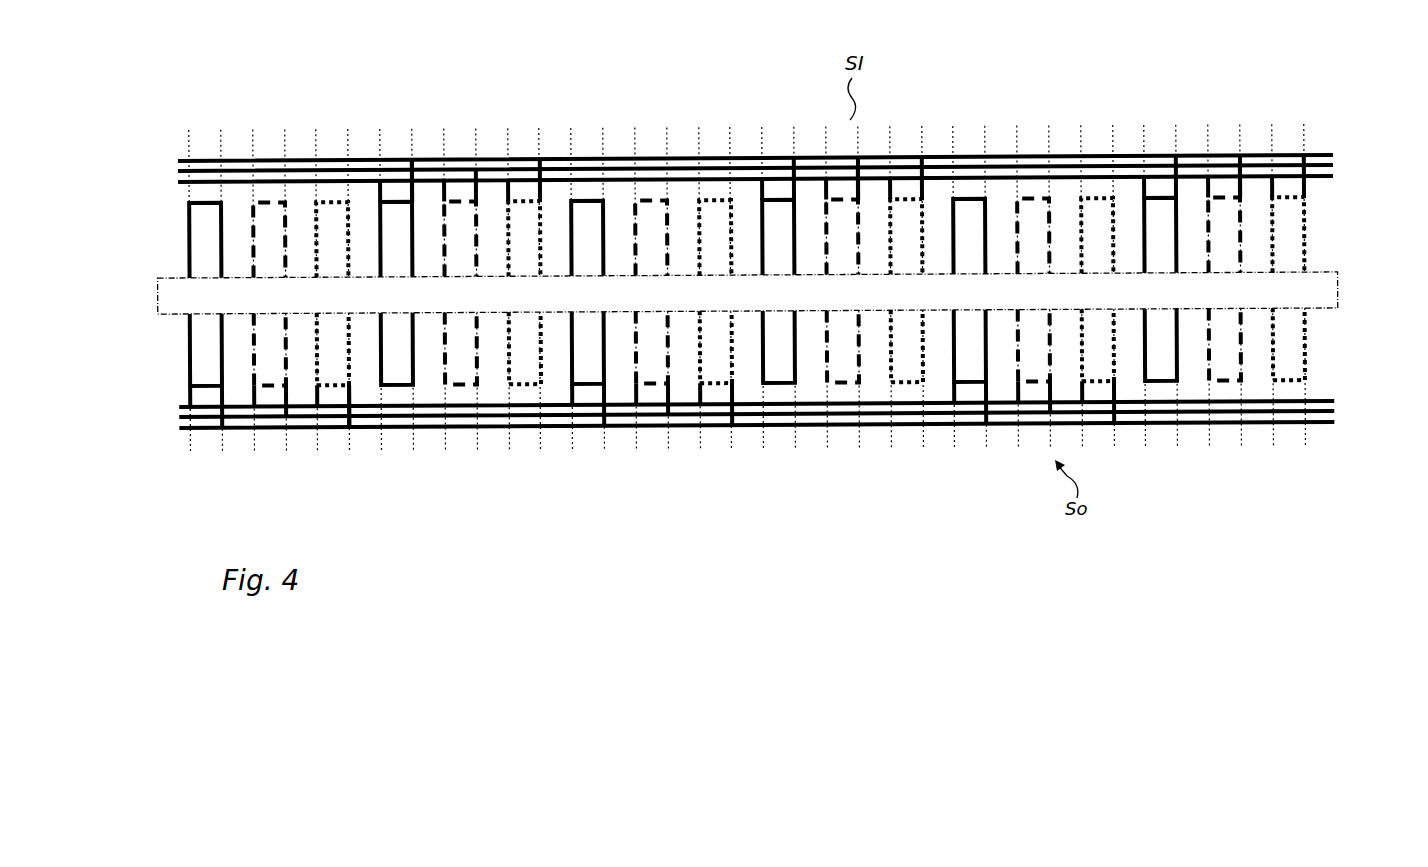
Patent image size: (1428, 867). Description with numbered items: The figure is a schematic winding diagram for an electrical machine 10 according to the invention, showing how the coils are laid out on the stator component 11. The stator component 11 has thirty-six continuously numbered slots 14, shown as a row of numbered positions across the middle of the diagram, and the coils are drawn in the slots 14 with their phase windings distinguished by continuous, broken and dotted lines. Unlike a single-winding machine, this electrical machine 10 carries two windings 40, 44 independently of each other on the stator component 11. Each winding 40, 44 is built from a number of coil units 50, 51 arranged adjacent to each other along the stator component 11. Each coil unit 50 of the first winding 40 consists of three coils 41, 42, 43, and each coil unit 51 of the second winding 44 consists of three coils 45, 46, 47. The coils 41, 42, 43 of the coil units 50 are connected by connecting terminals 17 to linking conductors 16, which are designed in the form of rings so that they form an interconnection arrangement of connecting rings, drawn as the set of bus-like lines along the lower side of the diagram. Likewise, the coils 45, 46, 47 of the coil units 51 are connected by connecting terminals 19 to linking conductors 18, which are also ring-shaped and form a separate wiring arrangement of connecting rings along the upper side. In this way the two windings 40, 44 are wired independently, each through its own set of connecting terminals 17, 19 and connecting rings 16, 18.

The electrical machine 10 is at (232, 122).
The stator component 11 is at (163, 231).
The slots 14 is at (412, 148).
The linking conductors 16 is at (1333, 422).
The connecting terminals 17 is at (984, 402).
The linking conductors 18 is at (1333, 176).
The connecting terminals 19 is at (790, 162).
The winding 40 is at (770, 464).
The coil 41 is at (715, 386).
The coil 42 is at (650, 386).
The coil 43 is at (588, 386).
The winding 44 is at (768, 123).
The coil 45 is at (523, 222).
The coil 46 is at (460, 222).
The coil 47 is at (402, 223).
The coil unit 50 is at (557, 441).
The coil unit 51 is at (366, 131).